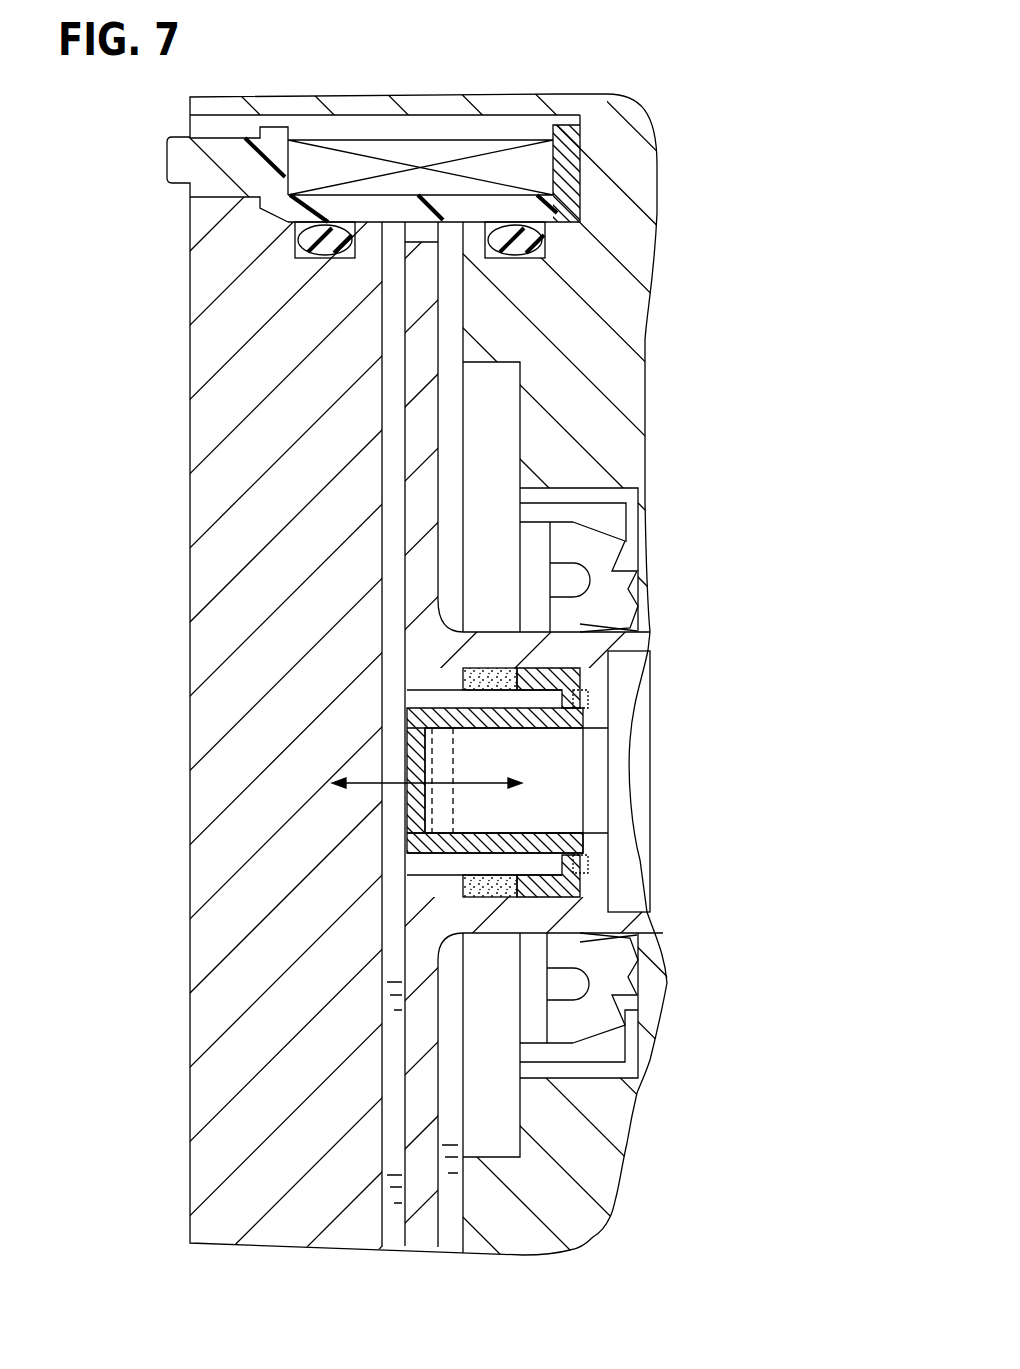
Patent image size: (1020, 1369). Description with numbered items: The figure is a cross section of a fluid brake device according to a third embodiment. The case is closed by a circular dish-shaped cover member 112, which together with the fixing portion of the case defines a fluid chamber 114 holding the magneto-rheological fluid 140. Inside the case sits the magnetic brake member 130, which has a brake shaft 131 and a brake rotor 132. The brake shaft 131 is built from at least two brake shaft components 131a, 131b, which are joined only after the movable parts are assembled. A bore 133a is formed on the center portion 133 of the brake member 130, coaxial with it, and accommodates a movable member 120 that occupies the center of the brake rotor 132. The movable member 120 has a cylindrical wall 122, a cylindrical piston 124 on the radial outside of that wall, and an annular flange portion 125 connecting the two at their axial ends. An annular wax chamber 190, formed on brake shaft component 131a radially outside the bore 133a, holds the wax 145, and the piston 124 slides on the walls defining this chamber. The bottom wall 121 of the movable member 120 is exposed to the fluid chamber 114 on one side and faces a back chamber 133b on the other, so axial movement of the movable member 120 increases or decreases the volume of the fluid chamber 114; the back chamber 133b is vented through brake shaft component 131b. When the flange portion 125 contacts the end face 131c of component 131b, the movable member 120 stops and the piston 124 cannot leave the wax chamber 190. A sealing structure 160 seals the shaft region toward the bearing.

The cover member 112 is at (220, 258).
The fluid chamber 114 is at (422, 233).
The movable member 120 is at (412, 765).
The bottom wall 121 is at (420, 833).
The cylindrical wall 122 is at (470, 760).
The piston 124 is at (490, 705).
The flange portion 125 is at (625, 667).
The brake member 130 is at (641, 429).
The brake shaft 131 is at (659, 562).
The brake shaft component 131a is at (623, 540).
The brake shaft component 131b is at (583, 637).
The end face 131c is at (605, 715).
The brake rotor 132 is at (425, 342).
The center portion 133 is at (416, 808).
The bore 133a is at (497, 802).
The back chamber 133b is at (497, 802).
The magneto-rheological fluid 140 is at (390, 1217).
The wax 145 is at (520, 668).
The sealing structure 160 is at (487, 1003).
The wax chamber 190 is at (497, 890).